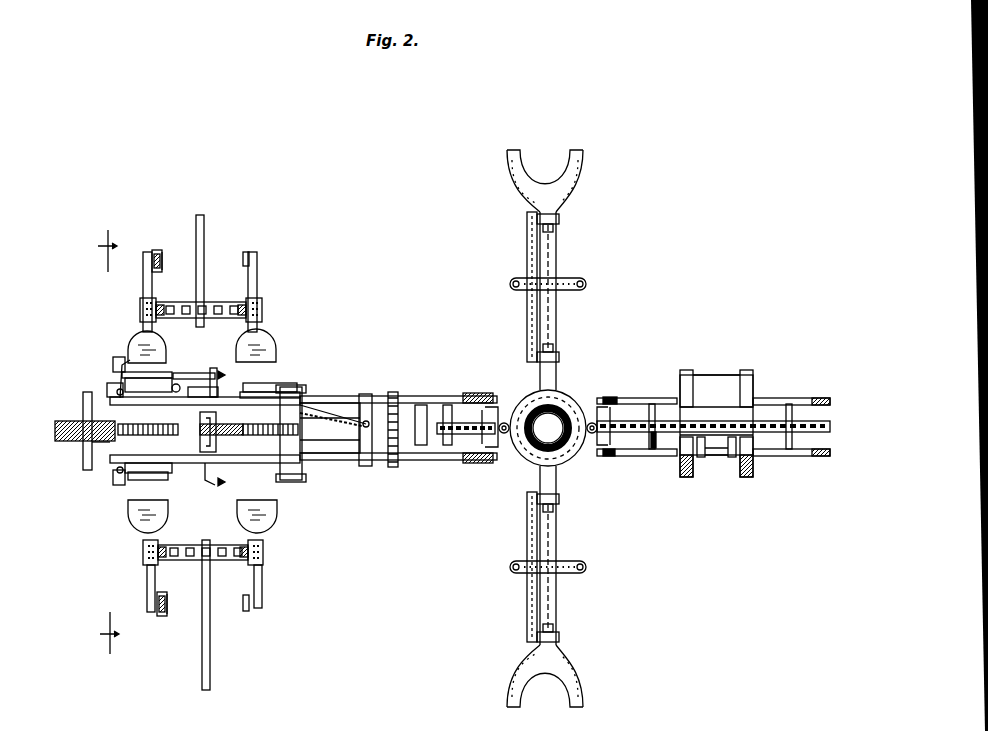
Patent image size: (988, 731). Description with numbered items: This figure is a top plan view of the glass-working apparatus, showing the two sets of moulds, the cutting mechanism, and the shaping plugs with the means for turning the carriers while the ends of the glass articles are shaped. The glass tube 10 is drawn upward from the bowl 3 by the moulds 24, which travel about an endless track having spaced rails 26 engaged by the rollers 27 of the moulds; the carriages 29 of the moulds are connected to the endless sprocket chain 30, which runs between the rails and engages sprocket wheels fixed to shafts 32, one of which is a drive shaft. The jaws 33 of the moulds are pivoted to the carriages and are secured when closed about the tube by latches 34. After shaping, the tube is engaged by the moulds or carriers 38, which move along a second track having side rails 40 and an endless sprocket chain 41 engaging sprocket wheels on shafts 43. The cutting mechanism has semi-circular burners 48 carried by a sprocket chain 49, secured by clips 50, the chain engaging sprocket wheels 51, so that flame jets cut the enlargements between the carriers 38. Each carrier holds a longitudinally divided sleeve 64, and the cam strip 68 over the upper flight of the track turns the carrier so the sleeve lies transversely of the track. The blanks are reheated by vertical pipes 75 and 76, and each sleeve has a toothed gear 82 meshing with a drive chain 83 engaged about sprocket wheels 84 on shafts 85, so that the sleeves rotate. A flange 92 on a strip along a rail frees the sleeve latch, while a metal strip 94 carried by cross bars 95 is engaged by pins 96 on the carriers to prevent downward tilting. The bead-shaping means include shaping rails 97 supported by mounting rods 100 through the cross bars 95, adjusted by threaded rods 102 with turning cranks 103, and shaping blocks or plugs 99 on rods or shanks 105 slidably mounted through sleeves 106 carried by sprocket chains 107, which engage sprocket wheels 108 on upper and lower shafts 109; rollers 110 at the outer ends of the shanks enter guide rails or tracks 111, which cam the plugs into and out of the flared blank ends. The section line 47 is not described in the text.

The bowl 3 is at (108, 445).
The tube 10 is at (532, 455).
The moulds 24 is at (730, 378).
The rails 26 is at (768, 405).
The rollers 27 is at (612, 400).
The carriages 29 is at (604, 408).
The endless sprocket chain 30 is at (653, 448).
The shafts 32 is at (655, 402).
The jaws 33 is at (700, 380).
The latches 34 is at (726, 455).
The moulds or carriers 38 is at (108, 388).
The side rails 40 is at (340, 393).
The endless sprocket chain 41 is at (465, 404).
The shafts 43 is at (455, 440).
The vertical bar 47 is at (562, 248).
The burners 48 is at (556, 190).
The sprocket chain 49 is at (527, 250).
The clips 50 is at (560, 222).
The sprocket wheels 51 is at (527, 318).
The longitudinally divided sleeves 64 is at (412, 460).
The cam strip 68 is at (316, 403).
The pipes 75 is at (116, 390).
The pipes 76 is at (178, 384).
The gear 82 is at (165, 418).
The drive chain 83 is at (62, 420).
The sprocket wheels 84 is at (78, 445).
The shafts 85 is at (90, 468).
The flange 92 is at (210, 480).
The metal strip 94 is at (200, 373).
The cross bars 95 is at (214, 387).
The pins 96 is at (213, 368).
The shaping rails 97 is at (128, 372).
The shaping blocks or plugs 99 is at (160, 345).
The mounting rods 100 is at (226, 375).
The threaded rods 102 is at (140, 372).
The turning cranks 103 is at (113, 363).
The rods or shanks 105 is at (143, 262).
The sleeves 106 is at (140, 307).
The sprocket chains 107 is at (240, 302).
The sprocket wheels 108 is at (190, 560).
The shafts 109 is at (204, 240).
The rollers 110 is at (160, 252).
The guide rails or tracks 111 is at (166, 258).